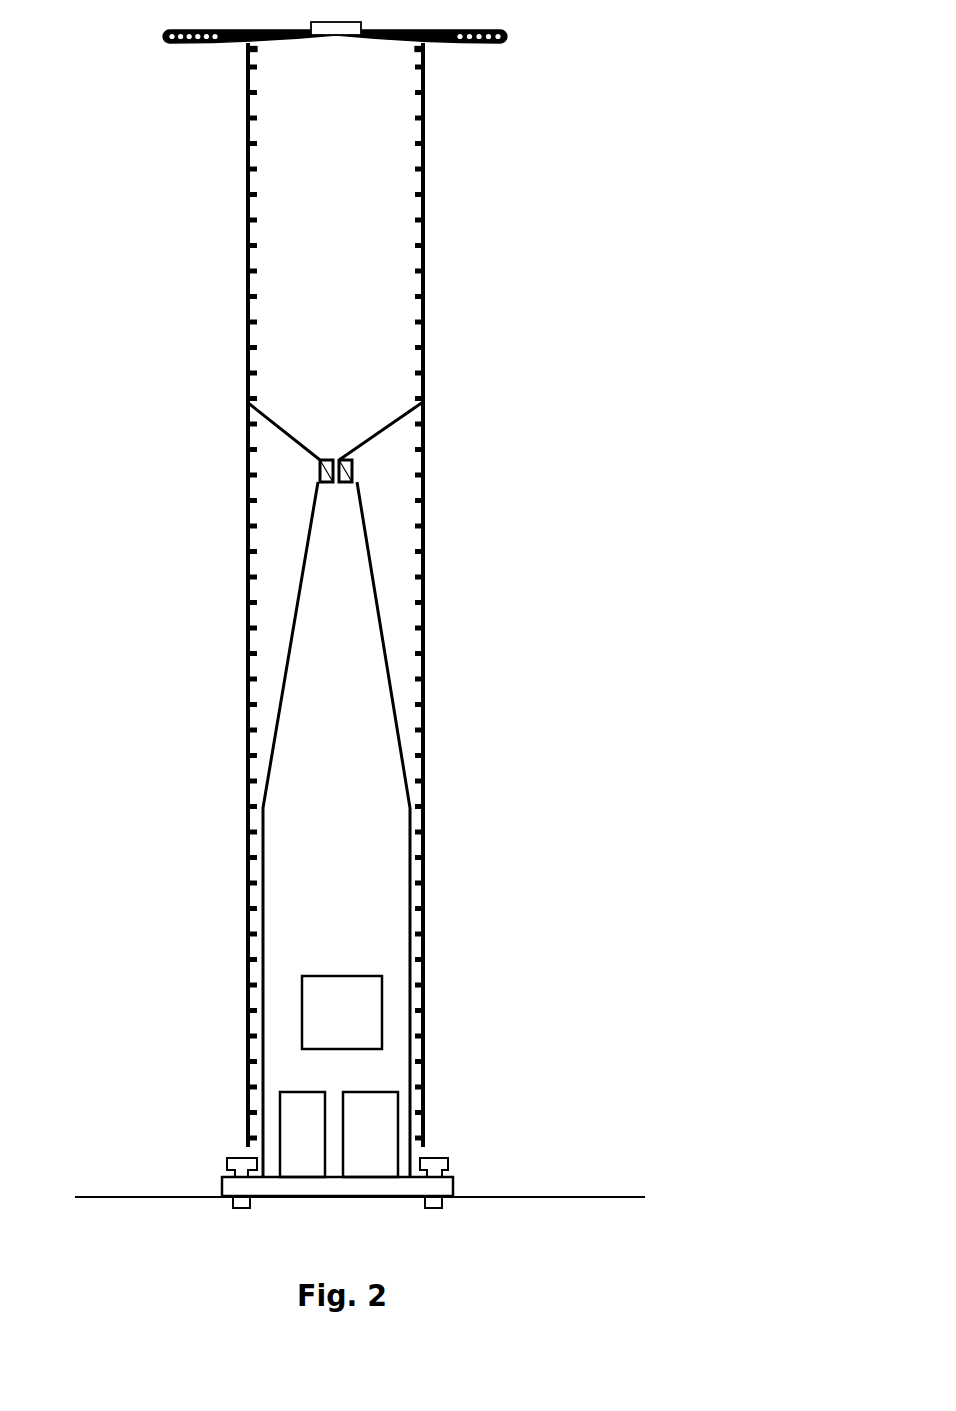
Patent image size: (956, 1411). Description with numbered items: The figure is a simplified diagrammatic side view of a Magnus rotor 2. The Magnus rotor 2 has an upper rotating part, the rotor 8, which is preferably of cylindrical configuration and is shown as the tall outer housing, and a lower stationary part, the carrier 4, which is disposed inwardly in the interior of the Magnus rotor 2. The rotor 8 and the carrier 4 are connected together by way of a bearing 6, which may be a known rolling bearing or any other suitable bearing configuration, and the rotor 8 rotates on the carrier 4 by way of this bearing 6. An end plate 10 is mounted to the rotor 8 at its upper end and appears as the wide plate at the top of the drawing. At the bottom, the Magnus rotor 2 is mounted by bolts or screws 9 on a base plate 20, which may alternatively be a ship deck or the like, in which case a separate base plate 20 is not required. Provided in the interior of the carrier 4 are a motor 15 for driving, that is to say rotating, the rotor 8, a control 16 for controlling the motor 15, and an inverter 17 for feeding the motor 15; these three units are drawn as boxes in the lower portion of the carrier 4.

The Magnus rotor 2 is at (545, 403).
The carrier 4 is at (343, 843).
The bearing 6 is at (342, 458).
The rotor 8 is at (425, 198).
The bolts or screws 9 is at (440, 1158).
The end plate 10 is at (492, 44).
The motor 15 is at (362, 1003).
The control 16 is at (370, 1108).
The inverter 17 is at (307, 1147).
The base plate 20 is at (576, 1257).